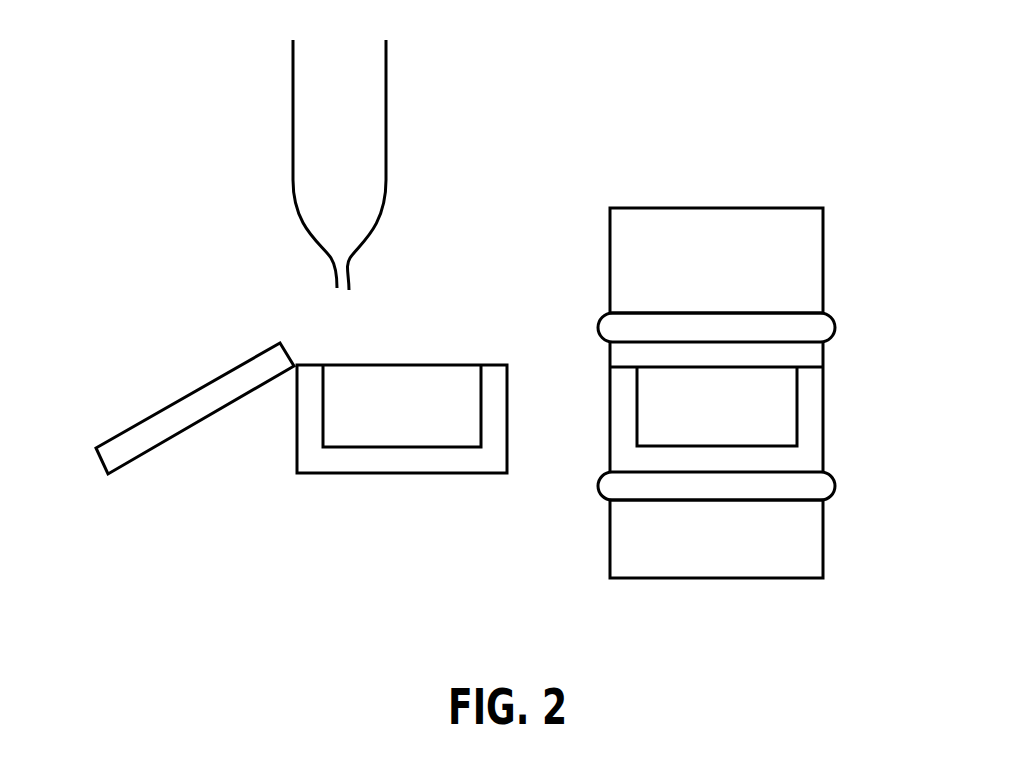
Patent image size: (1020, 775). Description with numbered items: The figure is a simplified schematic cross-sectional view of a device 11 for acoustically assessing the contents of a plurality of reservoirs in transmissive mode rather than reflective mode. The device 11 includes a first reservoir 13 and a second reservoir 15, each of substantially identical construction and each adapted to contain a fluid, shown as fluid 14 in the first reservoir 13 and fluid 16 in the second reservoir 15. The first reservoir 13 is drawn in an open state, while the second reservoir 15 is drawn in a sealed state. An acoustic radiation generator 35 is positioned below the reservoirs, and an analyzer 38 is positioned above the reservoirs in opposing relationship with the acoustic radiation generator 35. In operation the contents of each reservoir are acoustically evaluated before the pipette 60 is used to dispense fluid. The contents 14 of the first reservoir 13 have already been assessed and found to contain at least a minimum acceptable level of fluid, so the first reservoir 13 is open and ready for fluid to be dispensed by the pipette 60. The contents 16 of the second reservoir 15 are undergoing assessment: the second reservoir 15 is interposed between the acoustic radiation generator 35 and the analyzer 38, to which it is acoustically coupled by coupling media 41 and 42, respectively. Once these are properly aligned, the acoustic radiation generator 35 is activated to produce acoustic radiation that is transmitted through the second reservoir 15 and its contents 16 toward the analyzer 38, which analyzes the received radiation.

The device 11 is at (165, 243).
The first reservoir 13 is at (357, 423).
The fluid 14 is at (388, 427).
The second reservoir 15 is at (762, 393).
The fluid 16 is at (703, 430).
The acoustic radiation generator 35 is at (703, 562).
The analyzer 38 is at (702, 280).
The coupling medium 41 is at (835, 486).
The coupling medium 42 is at (835, 325).
The pipette 60 is at (323, 152).